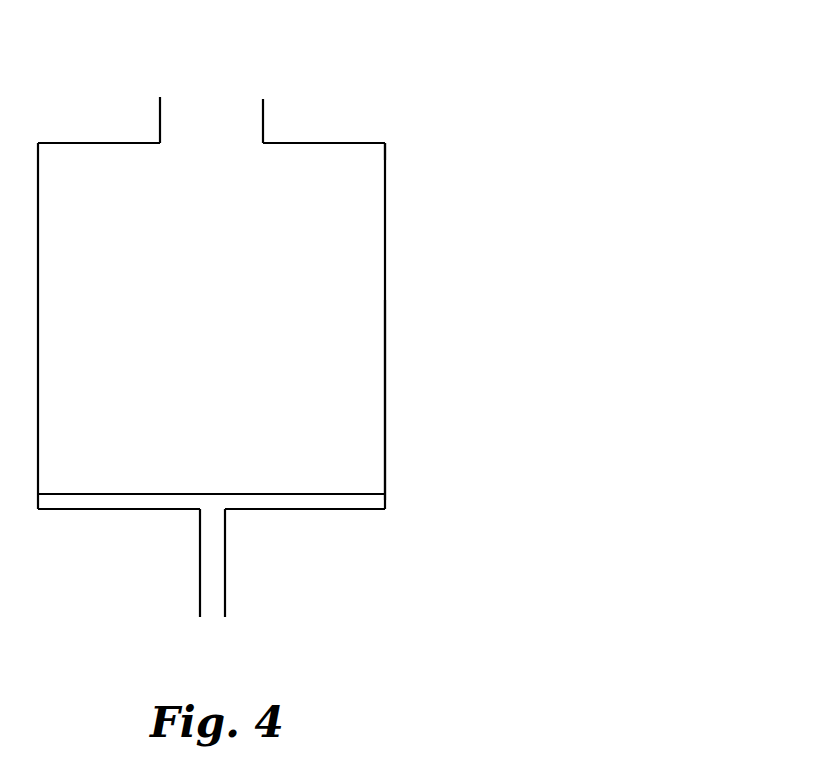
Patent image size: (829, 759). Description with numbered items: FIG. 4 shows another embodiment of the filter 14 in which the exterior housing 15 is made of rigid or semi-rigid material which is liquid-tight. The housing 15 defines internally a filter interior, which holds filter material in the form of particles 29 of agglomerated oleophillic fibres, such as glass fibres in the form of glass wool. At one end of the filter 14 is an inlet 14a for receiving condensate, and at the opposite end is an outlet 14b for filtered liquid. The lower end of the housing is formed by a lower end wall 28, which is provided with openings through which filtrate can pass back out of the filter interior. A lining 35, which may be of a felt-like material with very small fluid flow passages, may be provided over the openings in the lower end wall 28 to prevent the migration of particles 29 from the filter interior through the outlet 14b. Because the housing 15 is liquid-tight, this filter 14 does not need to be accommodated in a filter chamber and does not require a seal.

The filter 14 is at (390, 222).
The inlet 14a is at (222, 123).
The outlet 14b is at (213, 598).
The exterior housing 15 is at (385, 404).
The lower end wall 28 is at (102, 510).
The particles of agglomerated oleophillic fibres 29 is at (373, 172).
The lining 35 is at (315, 500).